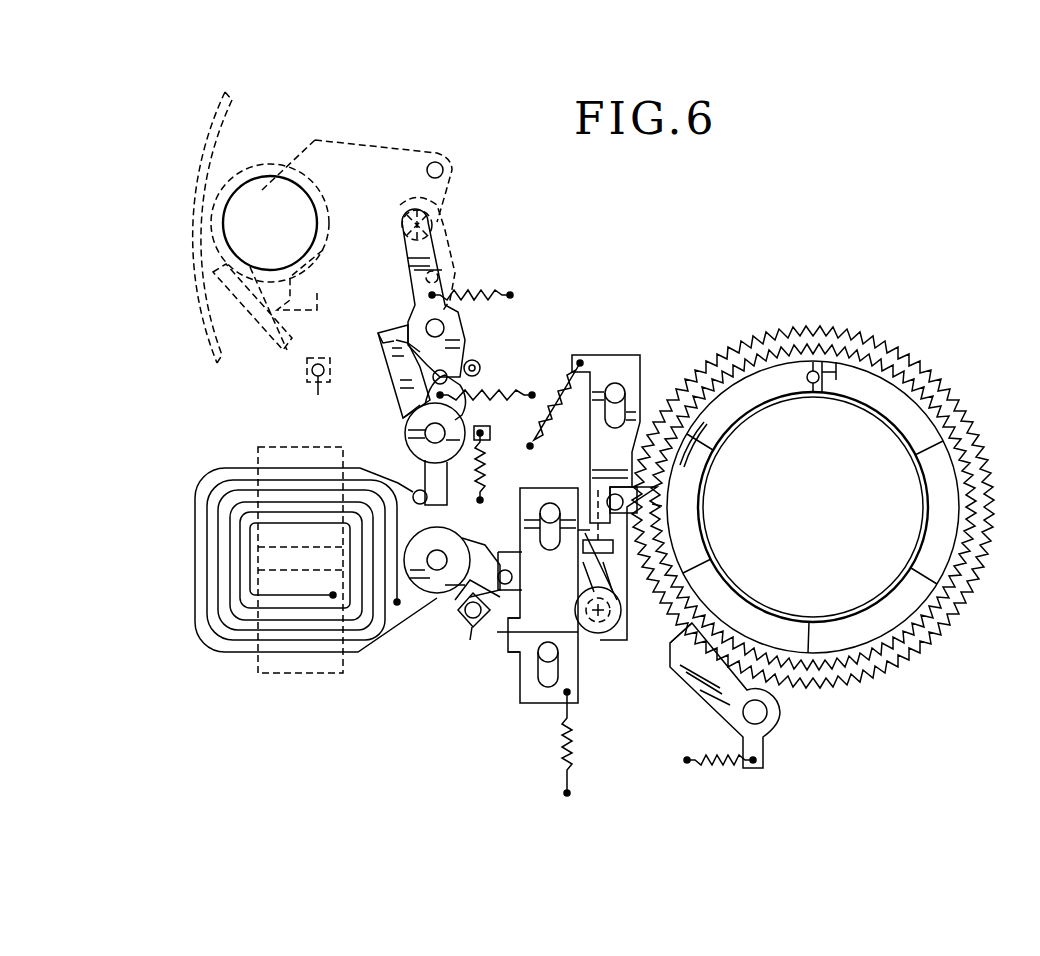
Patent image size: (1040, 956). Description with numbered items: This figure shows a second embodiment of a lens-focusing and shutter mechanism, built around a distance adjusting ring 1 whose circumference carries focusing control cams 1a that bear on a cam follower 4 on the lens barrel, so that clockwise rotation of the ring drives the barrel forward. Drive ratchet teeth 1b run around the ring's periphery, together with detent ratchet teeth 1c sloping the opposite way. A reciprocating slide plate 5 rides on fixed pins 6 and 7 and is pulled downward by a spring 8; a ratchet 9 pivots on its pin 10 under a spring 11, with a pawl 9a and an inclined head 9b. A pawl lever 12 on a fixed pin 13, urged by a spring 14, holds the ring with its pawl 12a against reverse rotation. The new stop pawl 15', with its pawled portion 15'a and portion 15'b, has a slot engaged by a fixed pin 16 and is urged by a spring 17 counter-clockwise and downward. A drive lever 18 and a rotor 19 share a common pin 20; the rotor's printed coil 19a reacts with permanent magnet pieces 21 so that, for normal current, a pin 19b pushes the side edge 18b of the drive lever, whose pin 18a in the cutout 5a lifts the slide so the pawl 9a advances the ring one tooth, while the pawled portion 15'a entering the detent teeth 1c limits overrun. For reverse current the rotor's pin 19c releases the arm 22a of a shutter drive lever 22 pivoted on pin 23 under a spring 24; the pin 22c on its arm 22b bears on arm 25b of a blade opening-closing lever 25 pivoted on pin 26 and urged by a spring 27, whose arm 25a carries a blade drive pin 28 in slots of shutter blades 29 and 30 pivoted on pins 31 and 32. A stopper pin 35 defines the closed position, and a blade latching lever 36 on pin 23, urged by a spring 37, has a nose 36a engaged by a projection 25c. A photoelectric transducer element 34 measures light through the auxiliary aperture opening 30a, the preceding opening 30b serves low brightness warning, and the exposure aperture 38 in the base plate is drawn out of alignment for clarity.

The distance adjusting ring 1 is at (760, 343).
The focusing control cams 1a is at (829, 360).
The ratchet teeth 1b is at (670, 607).
The detent ratchet teeth 1c is at (713, 442).
The cam follower 4 is at (811, 385).
The reciprocating slide plate 5 is at (580, 675).
The cutout 5a is at (520, 580).
The pin 6 is at (538, 665).
The pin 7 is at (556, 545).
The spring 8 is at (573, 744).
The ratchet 9 is at (615, 568).
The ratchet pawl 9a is at (660, 510).
The ratchet head 9b is at (610, 487).
The pin 10 is at (600, 634).
The spring 11 is at (586, 612).
The pawl lever 12 is at (706, 690).
The pawl 12a is at (676, 647).
The pin 13 is at (768, 710).
The spring 14 is at (722, 752).
The stop pawl 15' is at (606, 417).
The pawled portion 15'a is at (716, 459).
The plate portion 15'b is at (584, 528).
The pin 16 is at (626, 391).
The spring 17 is at (574, 405).
The drive lever 18 is at (496, 634).
The pin 18a is at (514, 572).
The side edge 18b is at (455, 615).
The rotor 19 is at (418, 600).
The printed coil 19a is at (388, 630).
The pin 19b is at (470, 640).
The pin 19c is at (414, 490).
The common pin 20 is at (460, 607).
The permanent magnet pieces 21 is at (256, 448).
The shutter drive lever 22 is at (480, 480).
The arm 22a is at (460, 505).
The shutter drive lever arm 22b is at (468, 400).
The pin 22c is at (404, 415).
The pin 23 is at (490, 446).
The spring 24 is at (520, 392).
The blade opening-closing lever 25 is at (462, 318).
The arm 25a is at (412, 262).
The arm 25b is at (482, 365).
The projection 25c is at (408, 345).
The pin 26 is at (378, 335).
The spring 27 is at (491, 292).
The blade drive pin 28 is at (404, 197).
The shutter blade 29 is at (456, 250).
The shutter blade 30 is at (455, 180).
The auxiliary aperture opening 30a is at (258, 352).
The preceding opening 30b is at (318, 395).
The pin 31 is at (426, 278).
The pin 32 is at (436, 162).
The photoelectric transducer element 34 is at (296, 370).
The stopper pin 35 is at (480, 362).
The blade latching lever 36 is at (398, 390).
The nose 36a is at (392, 335).
The spring 37 is at (574, 482).
The exposure aperture 38 is at (222, 222).